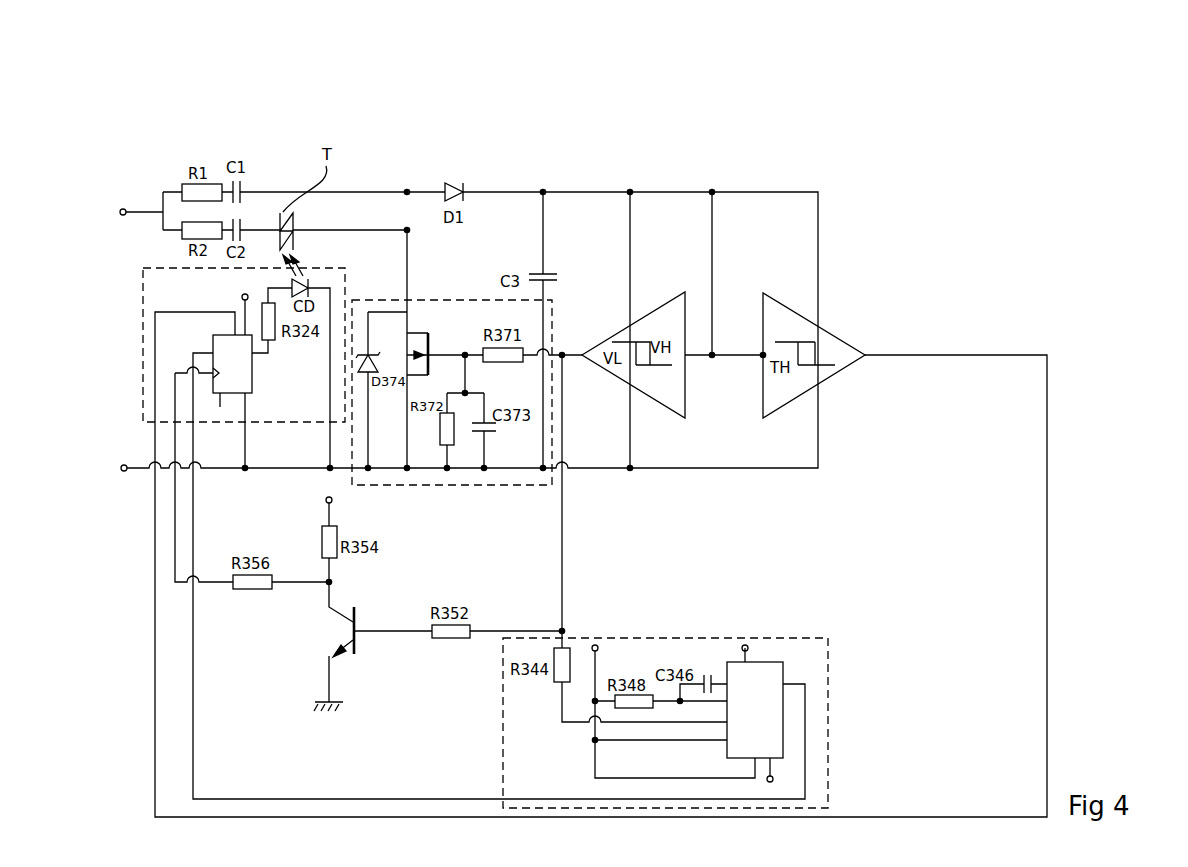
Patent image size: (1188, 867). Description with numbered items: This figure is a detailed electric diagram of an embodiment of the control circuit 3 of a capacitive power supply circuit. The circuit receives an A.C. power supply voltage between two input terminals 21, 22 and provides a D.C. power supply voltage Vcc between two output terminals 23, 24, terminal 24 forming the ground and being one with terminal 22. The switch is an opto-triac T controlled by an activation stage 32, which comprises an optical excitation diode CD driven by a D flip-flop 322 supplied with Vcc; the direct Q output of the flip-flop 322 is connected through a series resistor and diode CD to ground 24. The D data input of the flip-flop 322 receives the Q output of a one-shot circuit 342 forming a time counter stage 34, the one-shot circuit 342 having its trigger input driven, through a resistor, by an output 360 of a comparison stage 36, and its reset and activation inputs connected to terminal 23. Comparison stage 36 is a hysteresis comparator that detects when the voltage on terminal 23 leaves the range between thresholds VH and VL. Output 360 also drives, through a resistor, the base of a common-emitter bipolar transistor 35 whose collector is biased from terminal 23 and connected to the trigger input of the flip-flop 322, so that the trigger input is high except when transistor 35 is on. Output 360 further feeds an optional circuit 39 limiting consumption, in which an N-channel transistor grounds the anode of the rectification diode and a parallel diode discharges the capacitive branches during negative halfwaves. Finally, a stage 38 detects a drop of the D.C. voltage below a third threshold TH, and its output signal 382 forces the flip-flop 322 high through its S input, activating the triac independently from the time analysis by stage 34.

The control circuit 3 is at (910, 576).
The input terminal 21 is at (124, 209).
The input terminal 22 is at (124, 471).
The output terminal 23 is at (744, 649).
The output terminal 24 is at (783, 787).
The activation stage 32 is at (143, 320).
The D flip-flop 322 is at (252, 373).
The time counter stage 34 is at (668, 638).
The one-shot circuit 342 is at (763, 662).
The bipolar transistor 35 is at (342, 631).
The comparison stage 36 is at (653, 305).
The detection stage 38 is at (847, 340).
The output signal 382 is at (1047, 542).
The consumption limiting circuit 39 is at (425, 487).
The output of comparison stage 360 is at (563, 555).